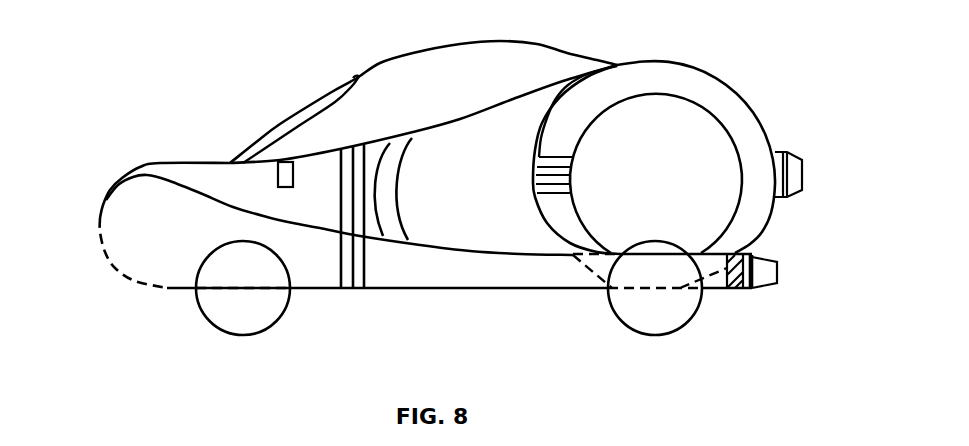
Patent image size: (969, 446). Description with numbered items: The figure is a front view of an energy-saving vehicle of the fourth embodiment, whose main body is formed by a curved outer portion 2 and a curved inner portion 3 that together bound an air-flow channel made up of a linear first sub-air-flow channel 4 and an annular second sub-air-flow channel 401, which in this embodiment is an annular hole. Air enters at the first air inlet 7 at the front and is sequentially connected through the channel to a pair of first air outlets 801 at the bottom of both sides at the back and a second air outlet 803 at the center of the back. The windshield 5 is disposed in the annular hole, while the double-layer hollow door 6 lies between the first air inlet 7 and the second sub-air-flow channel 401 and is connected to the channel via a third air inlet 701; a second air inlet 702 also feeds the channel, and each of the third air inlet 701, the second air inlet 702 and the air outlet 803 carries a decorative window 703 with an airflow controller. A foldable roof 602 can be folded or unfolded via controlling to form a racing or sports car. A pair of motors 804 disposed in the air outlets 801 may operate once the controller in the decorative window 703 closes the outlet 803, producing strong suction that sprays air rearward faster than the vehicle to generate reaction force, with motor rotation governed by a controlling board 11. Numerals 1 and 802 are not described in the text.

The vehicle body 1 is at (198, 160).
The outer portion 2 is at (520, 255).
The inner portion 3 is at (437, 289).
The first sub-air-flow channel 4 is at (400, 277).
The windshield 5 is at (313, 153).
The door 6 is at (483, 188).
The first air inlet 7 is at (100, 232).
The controlling board 11 is at (293, 165).
The second sub-air-flow channel 401 is at (653, 73).
The foldable roof 602 is at (582, 51).
The third air inlet 701 is at (337, 289).
The second air inlet 702 is at (543, 289).
The decorative window 703 is at (358, 215).
The first air outlet 801 is at (778, 263).
The tail lamp 802 is at (752, 288).
The second air outlet 803 is at (802, 177).
The motor 804 is at (730, 287).